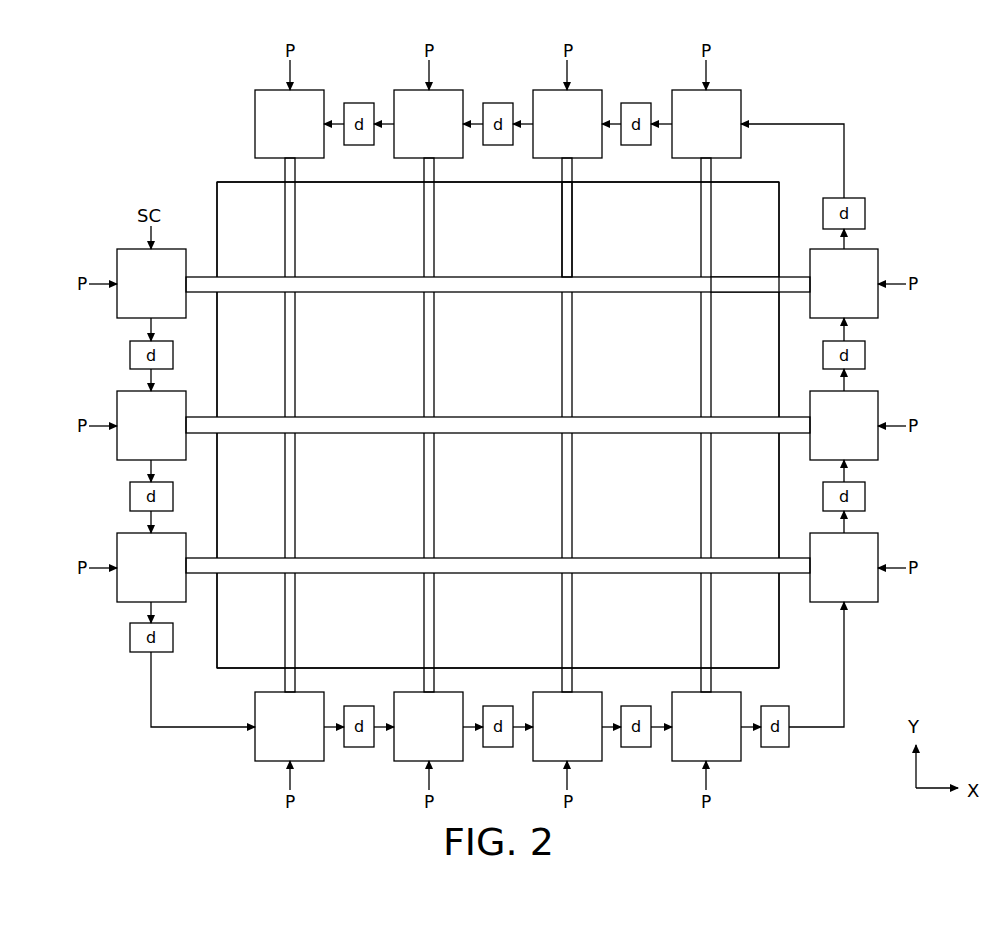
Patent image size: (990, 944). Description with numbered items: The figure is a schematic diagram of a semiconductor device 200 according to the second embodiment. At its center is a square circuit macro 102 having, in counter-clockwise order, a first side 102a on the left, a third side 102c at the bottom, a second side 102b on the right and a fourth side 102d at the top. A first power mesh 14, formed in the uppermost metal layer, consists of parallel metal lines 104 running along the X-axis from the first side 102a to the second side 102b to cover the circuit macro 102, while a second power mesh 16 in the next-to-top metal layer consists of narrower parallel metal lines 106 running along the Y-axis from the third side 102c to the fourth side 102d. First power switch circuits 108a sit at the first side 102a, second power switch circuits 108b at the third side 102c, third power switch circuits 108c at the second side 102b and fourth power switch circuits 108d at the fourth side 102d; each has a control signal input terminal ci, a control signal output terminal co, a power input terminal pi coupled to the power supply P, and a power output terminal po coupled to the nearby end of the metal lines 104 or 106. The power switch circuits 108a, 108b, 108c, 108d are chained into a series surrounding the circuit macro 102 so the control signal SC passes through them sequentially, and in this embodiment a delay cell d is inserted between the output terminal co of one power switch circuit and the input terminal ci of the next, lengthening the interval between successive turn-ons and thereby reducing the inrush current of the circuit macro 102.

The semiconductor device 200 is at (58, 62).
The circuit macro 102 is at (375, 220).
The first side 102a is at (217, 196).
The second side 102b is at (780, 200).
The third side 102c is at (247, 668).
The fourth side 102d is at (217, 182).
The metal lines 104 is at (498, 277).
The metal lines 106 is at (297, 322).
The first power switch circuits 108a is at (117, 260).
The second power switch circuits 108b is at (255, 760).
The third power switch circuits 108c is at (880, 264).
The fourth power switch circuits 108d is at (257, 90).
The first power mesh 14 is at (753, 274).
The second power mesh 16 is at (576, 234).